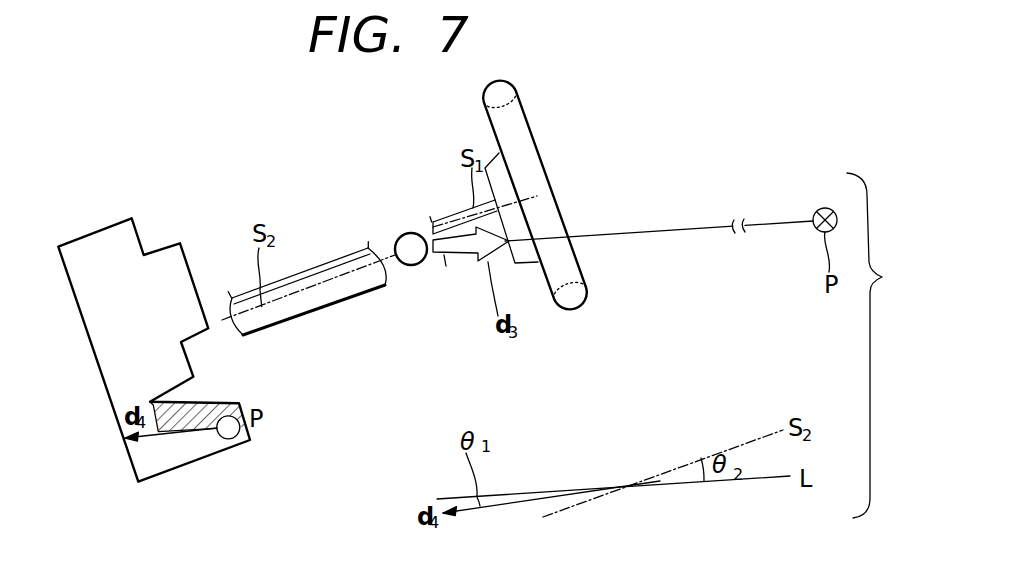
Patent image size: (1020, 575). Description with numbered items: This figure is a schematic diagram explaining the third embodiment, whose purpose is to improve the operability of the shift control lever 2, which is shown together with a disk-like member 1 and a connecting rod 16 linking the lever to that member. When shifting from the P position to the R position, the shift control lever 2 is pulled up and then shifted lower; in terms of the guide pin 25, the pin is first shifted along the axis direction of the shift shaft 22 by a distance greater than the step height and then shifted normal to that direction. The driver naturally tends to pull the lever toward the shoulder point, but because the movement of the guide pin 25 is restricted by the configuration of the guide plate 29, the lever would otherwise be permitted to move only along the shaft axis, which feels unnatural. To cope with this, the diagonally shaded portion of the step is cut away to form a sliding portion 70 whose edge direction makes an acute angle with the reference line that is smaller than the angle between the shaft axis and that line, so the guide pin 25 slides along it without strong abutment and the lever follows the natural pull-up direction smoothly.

The disk 1 is at (530, 125).
The shift control lever 2 is at (414, 268).
The rod 16 is at (448, 218).
The shift shaft 22 is at (317, 303).
The guide pin 25 is at (233, 439).
The guide plate 29 is at (133, 469).
The sliding portion 70 is at (194, 403).